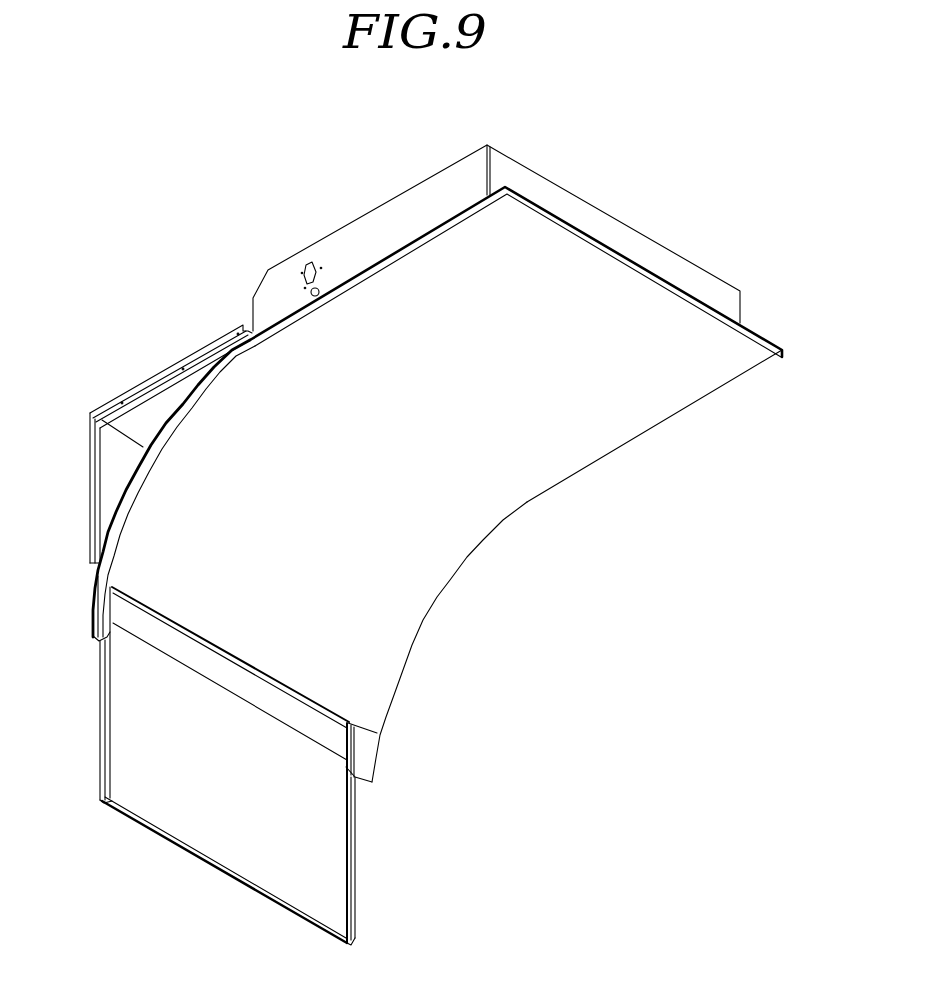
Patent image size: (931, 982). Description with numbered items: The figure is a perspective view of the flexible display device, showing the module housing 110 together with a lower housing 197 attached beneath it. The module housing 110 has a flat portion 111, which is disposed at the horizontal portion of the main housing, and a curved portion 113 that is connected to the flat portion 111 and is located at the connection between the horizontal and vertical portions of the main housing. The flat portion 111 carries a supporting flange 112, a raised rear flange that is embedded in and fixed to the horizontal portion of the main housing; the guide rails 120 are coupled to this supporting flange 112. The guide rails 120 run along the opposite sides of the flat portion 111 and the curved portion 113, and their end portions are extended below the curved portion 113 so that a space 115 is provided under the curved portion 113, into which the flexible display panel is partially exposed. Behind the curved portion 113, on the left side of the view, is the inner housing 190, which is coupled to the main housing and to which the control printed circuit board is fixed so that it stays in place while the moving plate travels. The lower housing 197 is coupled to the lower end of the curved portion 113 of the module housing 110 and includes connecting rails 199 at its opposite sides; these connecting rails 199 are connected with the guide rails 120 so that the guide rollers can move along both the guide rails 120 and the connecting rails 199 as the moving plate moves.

The module housing 110 is at (703, 184).
The flat portion 111 is at (680, 363).
The supporting flange 112 is at (400, 213).
The curved portion 113 is at (215, 393).
The space 115 is at (292, 706).
The guide rails 120 is at (355, 752).
The inner housing 190 is at (150, 405).
The lower housing 197 is at (175, 807).
The connecting rails 199 is at (347, 860).